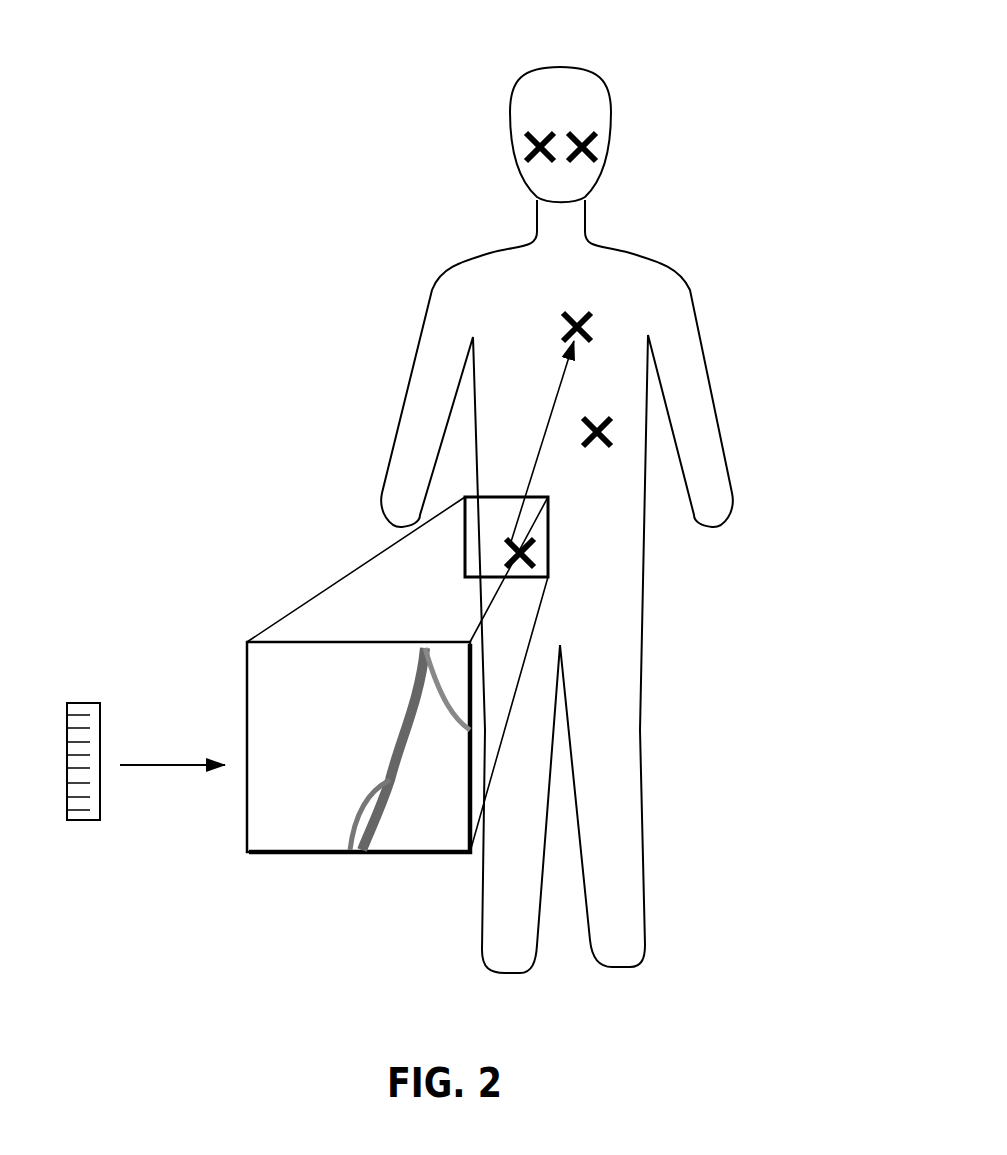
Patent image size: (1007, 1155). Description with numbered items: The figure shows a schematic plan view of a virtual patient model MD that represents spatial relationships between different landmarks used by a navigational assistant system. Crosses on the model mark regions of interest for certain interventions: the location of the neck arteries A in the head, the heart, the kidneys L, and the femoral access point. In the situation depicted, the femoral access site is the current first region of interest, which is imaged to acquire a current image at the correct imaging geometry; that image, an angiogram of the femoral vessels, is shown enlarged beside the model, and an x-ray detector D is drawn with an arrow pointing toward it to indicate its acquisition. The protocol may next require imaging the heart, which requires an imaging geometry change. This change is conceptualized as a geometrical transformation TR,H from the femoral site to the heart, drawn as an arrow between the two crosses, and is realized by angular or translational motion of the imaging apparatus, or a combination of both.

The neck arteries A is at (543, 127).
The conceptual or virtual model MD is at (712, 178).
The kidneys L is at (610, 442).
The transformation from R to H TR,H is at (547, 422).
The x-ray detector D is at (82, 820).